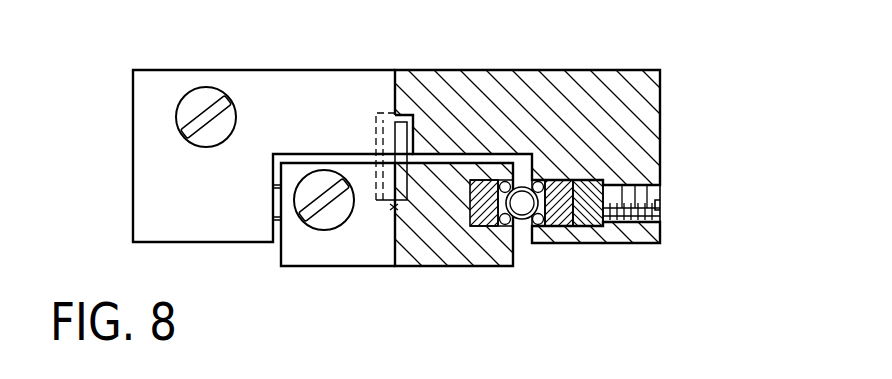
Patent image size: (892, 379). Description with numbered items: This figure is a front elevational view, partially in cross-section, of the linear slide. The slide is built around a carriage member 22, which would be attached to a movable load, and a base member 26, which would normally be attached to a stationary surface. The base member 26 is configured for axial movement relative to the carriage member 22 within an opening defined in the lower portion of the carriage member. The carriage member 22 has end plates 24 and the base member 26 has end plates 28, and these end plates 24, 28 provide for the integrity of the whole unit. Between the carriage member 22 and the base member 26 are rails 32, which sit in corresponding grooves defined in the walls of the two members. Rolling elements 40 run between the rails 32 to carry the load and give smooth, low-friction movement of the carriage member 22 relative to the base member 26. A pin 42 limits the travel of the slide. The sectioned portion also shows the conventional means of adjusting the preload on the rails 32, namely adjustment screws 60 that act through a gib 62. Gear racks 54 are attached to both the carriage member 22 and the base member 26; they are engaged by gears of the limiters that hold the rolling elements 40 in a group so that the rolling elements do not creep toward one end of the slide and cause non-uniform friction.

The carriage member 22 is at (637, 118).
The end plates 24 is at (147, 165).
The base member 26 is at (410, 252).
The end plates 28 is at (325, 253).
The rails 32 is at (533, 228).
The rolling elements 40 is at (521, 207).
The pin 42 is at (398, 140).
The gear racks 54 is at (482, 218).
The adjustment screws 60 is at (655, 193).
The gib 62 is at (585, 215).